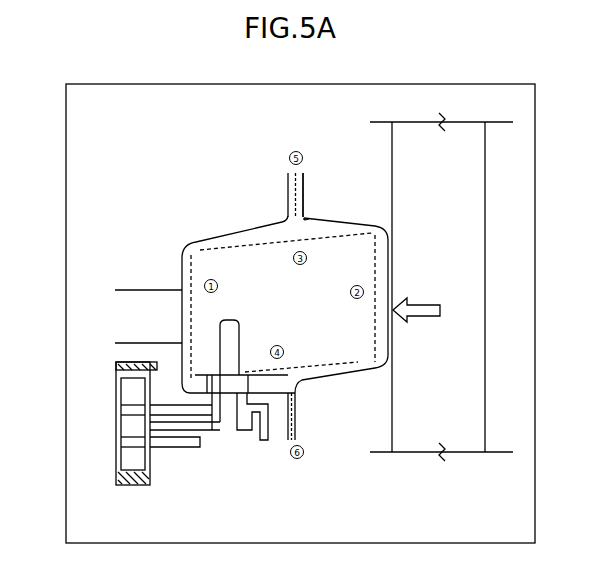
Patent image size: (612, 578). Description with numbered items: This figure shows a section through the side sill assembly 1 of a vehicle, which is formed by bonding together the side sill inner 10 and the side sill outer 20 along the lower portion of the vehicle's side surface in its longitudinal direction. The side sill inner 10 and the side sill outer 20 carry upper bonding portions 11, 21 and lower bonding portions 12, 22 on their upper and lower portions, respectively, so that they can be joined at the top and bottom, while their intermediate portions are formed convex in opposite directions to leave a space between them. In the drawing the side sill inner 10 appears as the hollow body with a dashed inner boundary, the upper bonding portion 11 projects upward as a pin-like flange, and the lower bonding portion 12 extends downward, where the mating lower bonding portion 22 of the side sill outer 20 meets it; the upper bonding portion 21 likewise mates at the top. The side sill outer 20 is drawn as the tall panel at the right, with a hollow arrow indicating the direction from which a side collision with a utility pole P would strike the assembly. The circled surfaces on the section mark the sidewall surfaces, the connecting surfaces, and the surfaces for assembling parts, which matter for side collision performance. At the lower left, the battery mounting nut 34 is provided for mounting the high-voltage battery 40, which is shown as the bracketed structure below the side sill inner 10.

The side sill assembly 1 is at (356, 133).
The side sill inner 10 is at (178, 308).
The upper bonding portion 11 is at (286, 186).
The lower bonding portion 12 is at (283, 418).
The side sill outer 20 is at (392, 268).
The upper bonding portion 21 is at (304, 183).
The lower bonding portion 22 is at (303, 407).
The battery mounting nut 34 is at (222, 337).
The high-voltage battery 40 is at (185, 437).
The utility pole P is at (423, 443).